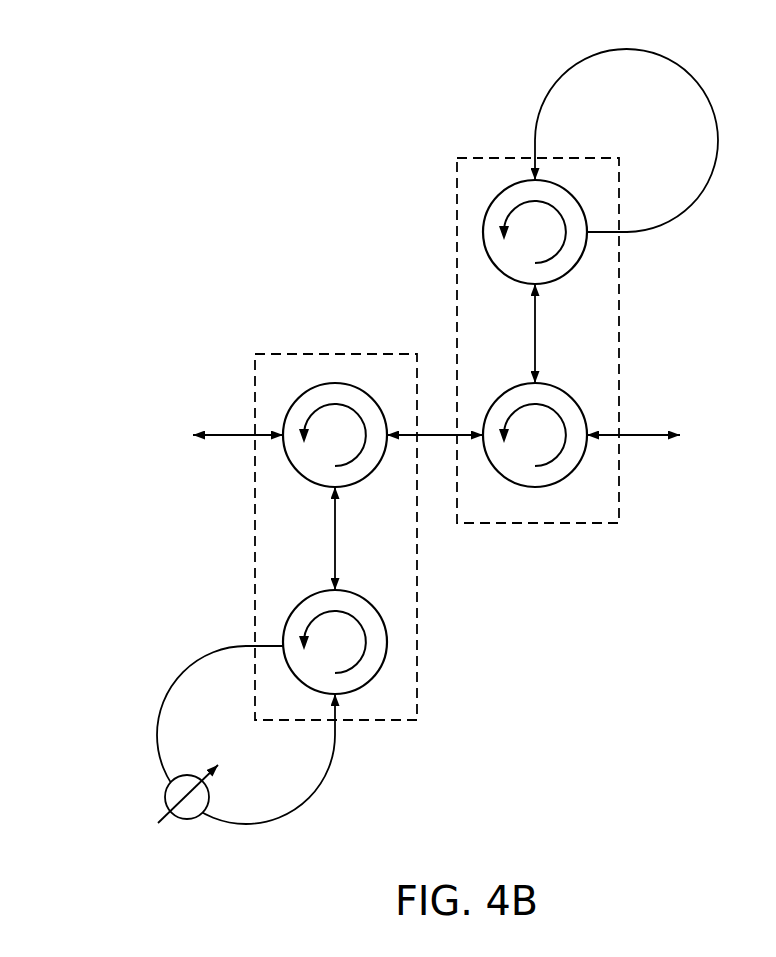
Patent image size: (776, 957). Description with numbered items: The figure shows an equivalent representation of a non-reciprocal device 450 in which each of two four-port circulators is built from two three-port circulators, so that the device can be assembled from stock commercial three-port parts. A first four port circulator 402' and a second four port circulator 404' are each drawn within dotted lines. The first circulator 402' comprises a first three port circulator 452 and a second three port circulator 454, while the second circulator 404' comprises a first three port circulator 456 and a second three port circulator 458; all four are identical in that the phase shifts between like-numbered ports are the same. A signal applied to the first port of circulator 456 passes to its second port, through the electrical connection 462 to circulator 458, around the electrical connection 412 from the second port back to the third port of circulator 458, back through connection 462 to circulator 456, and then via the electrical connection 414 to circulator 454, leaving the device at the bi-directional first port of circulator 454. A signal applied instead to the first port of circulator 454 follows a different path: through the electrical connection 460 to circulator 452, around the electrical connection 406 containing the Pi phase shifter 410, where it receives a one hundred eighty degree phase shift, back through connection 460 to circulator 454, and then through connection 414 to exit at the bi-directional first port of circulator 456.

The non-reciprocal device 450 is at (317, 155).
The electrical connection 412 is at (700, 83).
The second three port circulator 458 is at (583, 260).
The electrical connection 462 is at (540, 343).
The second four port circulator 404' is at (578, 340).
The electrical connection 414 is at (443, 440).
The first three port circulator 456 is at (538, 490).
The second three port circulator 454 is at (373, 473).
The electrical connection 460 is at (337, 550).
The first four port circulator 402' is at (376, 537).
The first three port circulator 452 is at (387, 658).
The electrical connection 406 is at (317, 797).
The phase shifter 410 is at (175, 818).